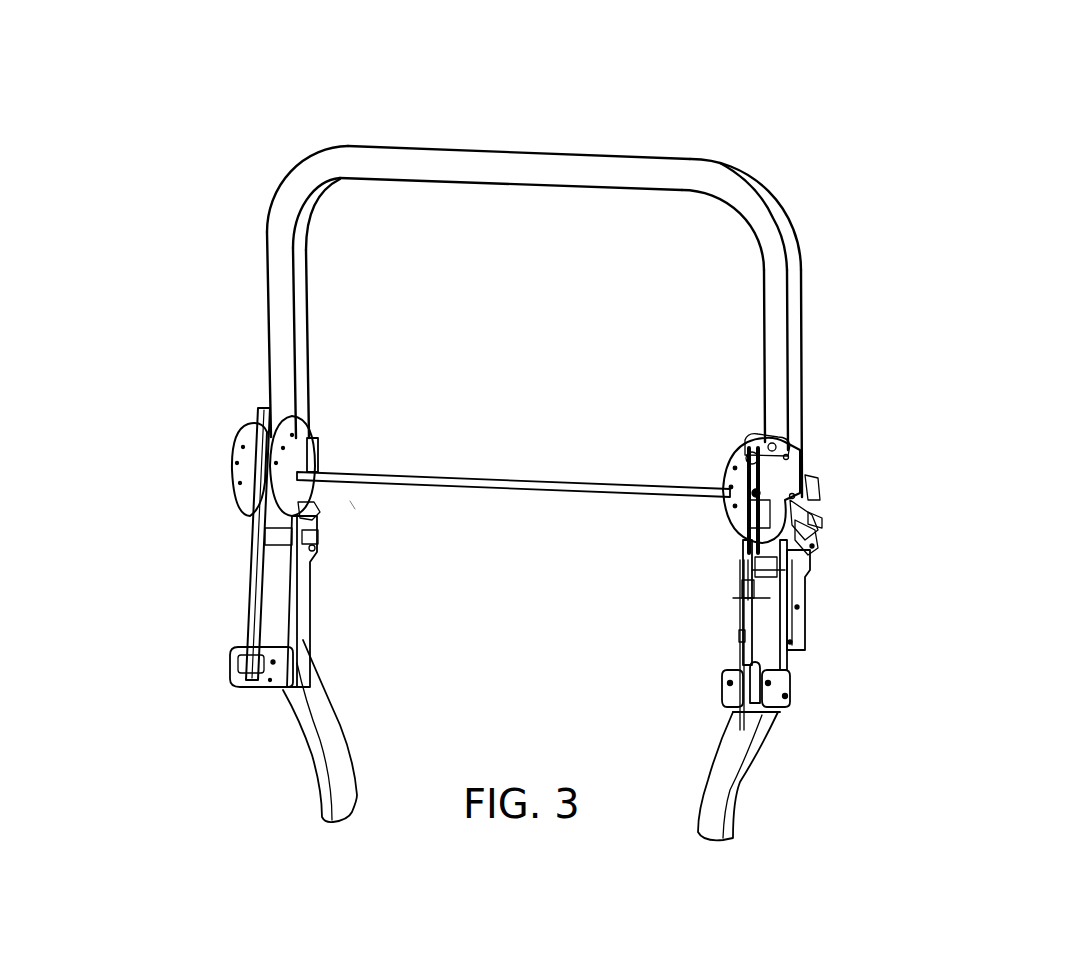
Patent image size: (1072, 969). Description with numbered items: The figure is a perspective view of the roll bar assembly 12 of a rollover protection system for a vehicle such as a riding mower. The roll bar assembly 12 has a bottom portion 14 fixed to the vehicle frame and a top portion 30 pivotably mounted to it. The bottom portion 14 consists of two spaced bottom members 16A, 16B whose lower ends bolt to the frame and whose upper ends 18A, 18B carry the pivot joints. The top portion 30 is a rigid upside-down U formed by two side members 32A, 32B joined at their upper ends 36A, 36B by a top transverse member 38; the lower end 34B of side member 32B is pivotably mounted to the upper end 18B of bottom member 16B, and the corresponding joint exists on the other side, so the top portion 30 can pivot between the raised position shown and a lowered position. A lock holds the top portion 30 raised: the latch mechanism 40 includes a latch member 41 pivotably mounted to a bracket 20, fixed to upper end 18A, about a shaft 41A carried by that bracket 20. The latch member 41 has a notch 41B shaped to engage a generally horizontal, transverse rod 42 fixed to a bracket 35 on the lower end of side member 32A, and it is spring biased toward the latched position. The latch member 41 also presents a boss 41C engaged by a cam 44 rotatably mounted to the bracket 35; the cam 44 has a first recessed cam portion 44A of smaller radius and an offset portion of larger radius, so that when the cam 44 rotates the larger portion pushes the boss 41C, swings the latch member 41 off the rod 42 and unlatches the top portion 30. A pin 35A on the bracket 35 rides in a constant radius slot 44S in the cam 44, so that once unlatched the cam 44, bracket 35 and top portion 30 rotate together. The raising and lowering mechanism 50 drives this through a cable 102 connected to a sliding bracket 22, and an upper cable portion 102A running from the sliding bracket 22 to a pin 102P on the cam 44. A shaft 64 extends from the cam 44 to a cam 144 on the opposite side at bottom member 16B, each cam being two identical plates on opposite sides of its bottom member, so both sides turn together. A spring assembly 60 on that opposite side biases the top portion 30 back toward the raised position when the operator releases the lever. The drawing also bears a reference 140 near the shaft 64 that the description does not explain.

The roll bar assembly 12 is at (775, 80).
The bottom portion 14 is at (885, 648).
The bottom member 16A is at (780, 740).
The bottom member 16B is at (337, 698).
The upper end 18A is at (800, 613).
The upper end 18B is at (310, 598).
The bracket 20 is at (788, 682).
The sliding bracket 22 is at (770, 647).
The top portion 30 is at (760, 132).
The side member 32A is at (767, 347).
The side member 32B is at (310, 315).
The lower end 34B is at (320, 430).
The bracket 35 is at (810, 517).
The pin 35A is at (770, 440).
The upper end 36A is at (738, 205).
The upper end 36B is at (315, 202).
The top transverse member 38 is at (500, 160).
The latch mechanism 40 is at (857, 490).
The latch member 41 is at (820, 528).
The shaft 41A is at (743, 573).
The notch 41B is at (820, 520).
The boss 41C is at (760, 522).
The rod 42 is at (815, 510).
The cam 44 is at (740, 510).
The first recessed cam portion 44A is at (817, 520).
The constant radius slot 44S is at (787, 420).
The raising and lowering mechanism 50 is at (942, 530).
The spring assembly 60 is at (243, 568).
The shaft 64 is at (460, 472).
The cable 102 is at (743, 628).
The upper cable portion 102A is at (732, 582).
The pin 102P is at (723, 437).
The rod direction 140 is at (350, 505).
The cam 144 is at (248, 478).